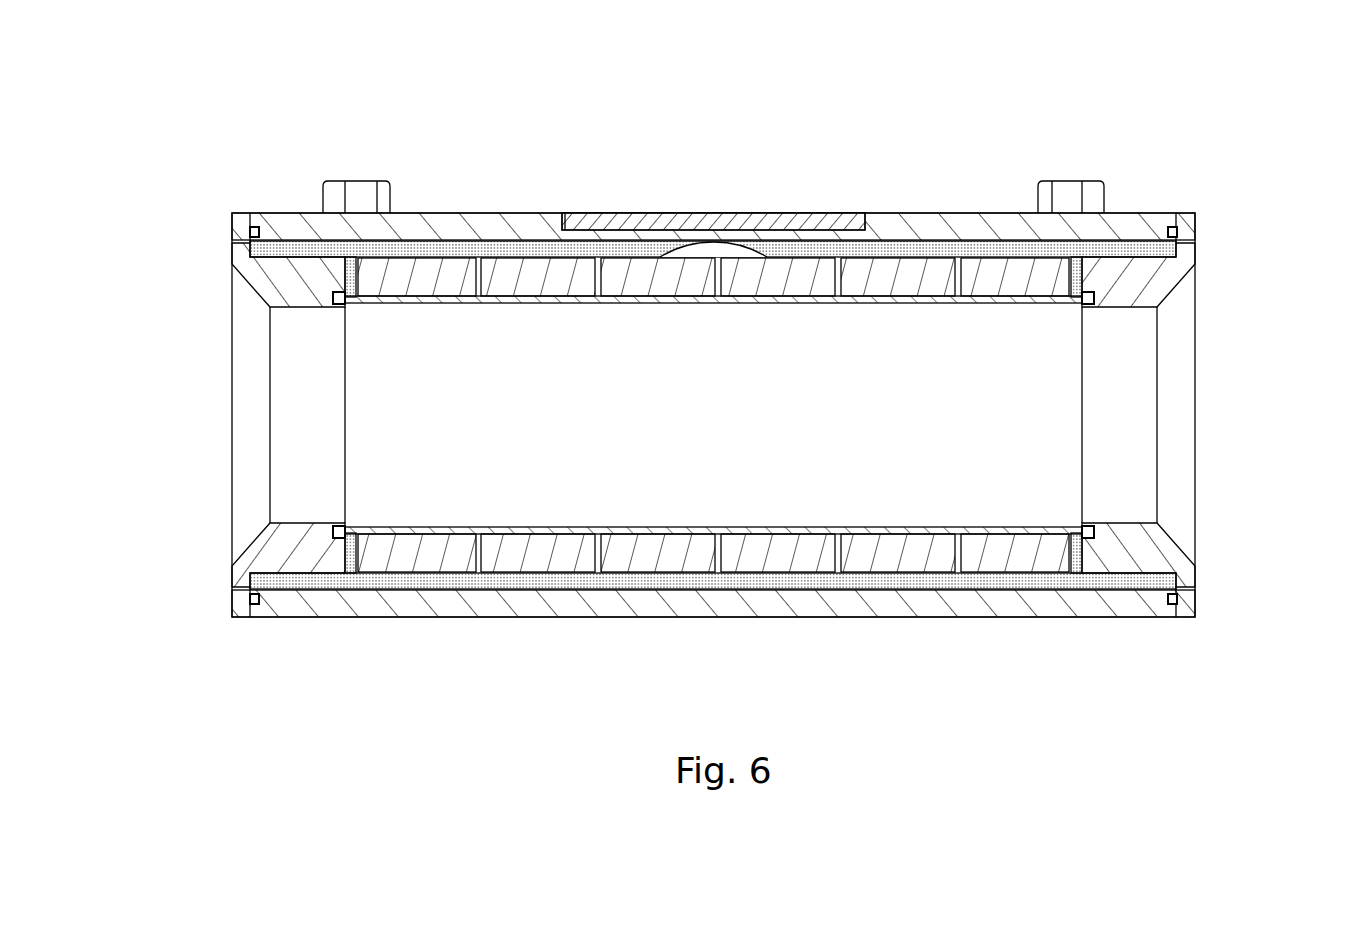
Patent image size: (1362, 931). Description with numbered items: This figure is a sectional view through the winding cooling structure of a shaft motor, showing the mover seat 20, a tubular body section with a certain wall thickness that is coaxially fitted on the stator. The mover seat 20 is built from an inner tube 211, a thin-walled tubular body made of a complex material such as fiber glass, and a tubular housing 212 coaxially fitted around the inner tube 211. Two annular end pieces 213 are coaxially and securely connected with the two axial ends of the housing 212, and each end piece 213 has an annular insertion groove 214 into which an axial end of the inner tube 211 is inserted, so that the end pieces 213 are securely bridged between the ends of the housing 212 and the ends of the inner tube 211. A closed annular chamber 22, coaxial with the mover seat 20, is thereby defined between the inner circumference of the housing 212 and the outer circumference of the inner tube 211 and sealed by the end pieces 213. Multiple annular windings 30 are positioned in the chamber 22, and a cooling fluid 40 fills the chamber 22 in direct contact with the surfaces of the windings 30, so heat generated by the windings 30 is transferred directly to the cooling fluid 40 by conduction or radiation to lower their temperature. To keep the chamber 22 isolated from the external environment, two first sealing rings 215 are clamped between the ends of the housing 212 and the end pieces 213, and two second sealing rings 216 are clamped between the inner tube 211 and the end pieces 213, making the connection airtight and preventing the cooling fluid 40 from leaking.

The mover seat 20 is at (958, 178).
The annular chamber 22 is at (993, 240).
The annular windings 30 is at (805, 278).
The cooling fluid 40 is at (622, 247).
The inner tube 211 is at (532, 298).
The housing 212 is at (470, 226).
The annular end pieces 213 is at (247, 262).
The annular insertion groove 214 is at (330, 532).
The first sealing rings 215 is at (255, 226).
The second sealing rings 216 is at (338, 292).